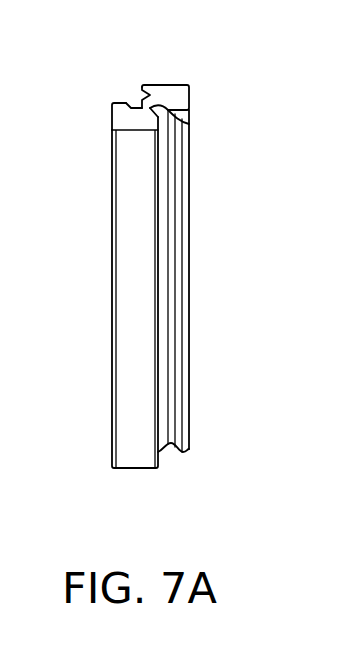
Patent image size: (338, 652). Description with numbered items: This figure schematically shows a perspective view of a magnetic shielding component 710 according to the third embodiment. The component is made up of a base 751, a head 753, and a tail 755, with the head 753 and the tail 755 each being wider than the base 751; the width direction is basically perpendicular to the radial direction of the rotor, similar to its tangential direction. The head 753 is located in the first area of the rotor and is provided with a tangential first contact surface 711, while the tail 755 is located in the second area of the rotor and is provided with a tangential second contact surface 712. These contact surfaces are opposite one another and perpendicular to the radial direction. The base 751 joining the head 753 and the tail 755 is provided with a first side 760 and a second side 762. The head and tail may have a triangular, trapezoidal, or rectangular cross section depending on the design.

The magnetic shielding component 710 is at (222, 40).
The first contact surface 711 is at (135, 97).
The second contact surface 712 is at (120, 101).
The base 751 is at (189, 125).
The head 753 is at (182, 84).
The tail 755 is at (111, 118).
The first side 760 is at (129, 103).
The second side 762 is at (167, 178).